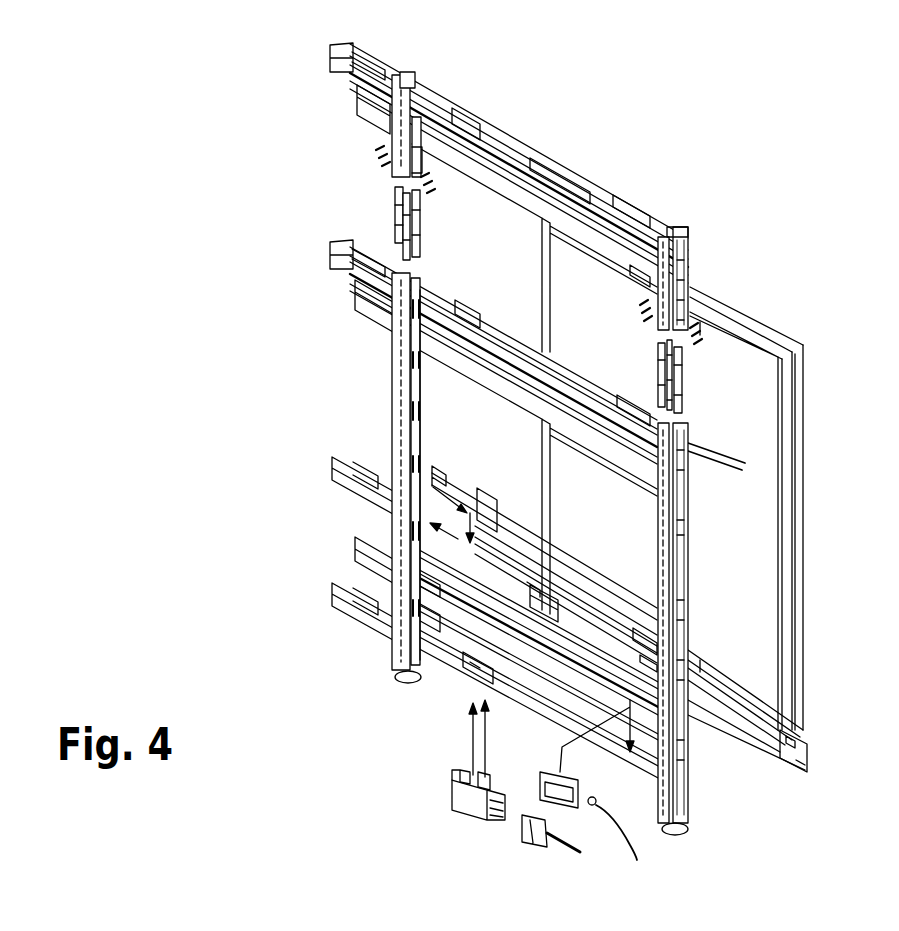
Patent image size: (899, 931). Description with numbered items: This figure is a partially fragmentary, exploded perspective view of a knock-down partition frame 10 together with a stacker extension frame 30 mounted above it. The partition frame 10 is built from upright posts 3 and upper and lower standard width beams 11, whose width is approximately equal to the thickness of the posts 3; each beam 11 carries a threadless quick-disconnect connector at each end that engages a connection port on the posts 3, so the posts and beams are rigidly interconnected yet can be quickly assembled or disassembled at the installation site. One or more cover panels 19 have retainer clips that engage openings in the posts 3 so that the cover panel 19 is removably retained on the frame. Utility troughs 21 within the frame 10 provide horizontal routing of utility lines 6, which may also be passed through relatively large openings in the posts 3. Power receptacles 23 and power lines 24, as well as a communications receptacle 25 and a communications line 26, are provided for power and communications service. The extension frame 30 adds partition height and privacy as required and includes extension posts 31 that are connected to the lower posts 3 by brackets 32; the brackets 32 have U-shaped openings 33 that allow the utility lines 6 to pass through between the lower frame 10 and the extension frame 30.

The upright posts 3 is at (393, 373).
The utility lines 6 is at (367, 68).
The partition frame 10 is at (385, 355).
The standard width beams 11 is at (358, 303).
The cover panels 19 is at (793, 342).
The utility troughs 21 is at (503, 130).
The power receptacles 23 is at (450, 805).
The power lines 24 is at (520, 838).
The communications receptacle 25 is at (550, 768).
The communications line 26 is at (601, 803).
The extension frame 30 is at (696, 235).
The extension posts 31 is at (390, 117).
The brackets 32 is at (397, 232).
The U-shaped openings 33 is at (657, 370).